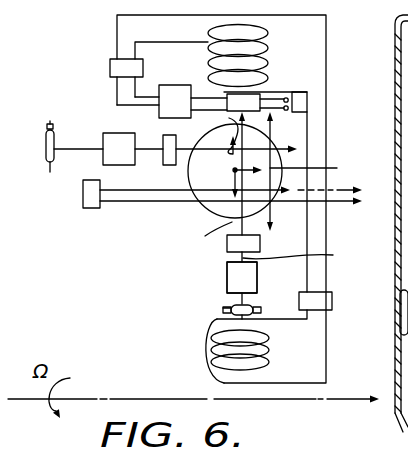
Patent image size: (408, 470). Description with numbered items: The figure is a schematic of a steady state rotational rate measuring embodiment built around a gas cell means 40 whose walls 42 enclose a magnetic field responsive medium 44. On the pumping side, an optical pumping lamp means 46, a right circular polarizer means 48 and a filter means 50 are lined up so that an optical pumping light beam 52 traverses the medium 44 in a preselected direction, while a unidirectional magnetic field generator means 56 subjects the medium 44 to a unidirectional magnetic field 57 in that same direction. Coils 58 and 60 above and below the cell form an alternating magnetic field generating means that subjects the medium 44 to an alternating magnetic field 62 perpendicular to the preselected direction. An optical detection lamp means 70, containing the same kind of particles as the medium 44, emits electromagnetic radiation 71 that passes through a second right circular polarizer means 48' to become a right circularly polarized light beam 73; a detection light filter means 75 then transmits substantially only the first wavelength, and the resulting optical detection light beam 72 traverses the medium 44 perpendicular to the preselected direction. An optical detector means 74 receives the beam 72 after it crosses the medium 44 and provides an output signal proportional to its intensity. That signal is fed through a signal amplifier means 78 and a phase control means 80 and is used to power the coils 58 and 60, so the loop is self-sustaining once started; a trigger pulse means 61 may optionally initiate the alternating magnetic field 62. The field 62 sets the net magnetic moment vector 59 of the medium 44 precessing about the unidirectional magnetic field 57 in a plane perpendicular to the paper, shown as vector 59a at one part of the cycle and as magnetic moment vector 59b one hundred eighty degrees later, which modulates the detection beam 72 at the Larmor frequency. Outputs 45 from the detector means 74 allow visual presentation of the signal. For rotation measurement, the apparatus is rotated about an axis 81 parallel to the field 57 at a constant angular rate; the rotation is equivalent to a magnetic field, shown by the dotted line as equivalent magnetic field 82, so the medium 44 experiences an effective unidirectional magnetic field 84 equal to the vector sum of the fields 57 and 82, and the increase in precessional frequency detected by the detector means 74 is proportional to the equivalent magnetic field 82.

The gas cell means 40 is at (210, 211).
The walls 42 is at (205, 238).
The magnetic field responsive medium 44 is at (257, 141).
The outputs 45 is at (307, 103).
The optical pumping lamp means 46 is at (60, 141).
The right circular polarizer means 48 is at (122, 138).
The right circular polarizer means 48' is at (260, 278).
The filter means 50 is at (172, 134).
The optical pumping light beam 52 is at (290, 143).
The unidirectional magnetic field generator means 56 is at (87, 208).
The unidirectional magnetic field 57 is at (127, 190).
The coil 58 is at (270, 355).
The net magnetic moment vector 59 is at (246, 173).
The vector 59a is at (215, 132).
The magnetic moment vector 59b is at (233, 172).
The coil 60 is at (265, 50).
The trigger pulse means 61 is at (332, 302).
The alternating magnetic field 62 is at (315, 166).
The optical detection lamp means 70 is at (223, 307).
The electromagnetic radiation 71 is at (253, 300).
The optical detection light beam 72 is at (227, 272).
The right circularly polarized light beam 73 is at (300, 258).
The optical detector means 74 is at (253, 100).
The detection light filter means 75 is at (260, 244).
The signal amplifier means 78 is at (172, 86).
The phase control means 80 is at (110, 67).
The axis 81 is at (262, 400).
The equivalent magnetic field 82 is at (336, 189).
The effective unidirectional magnetic field 84 is at (336, 206).